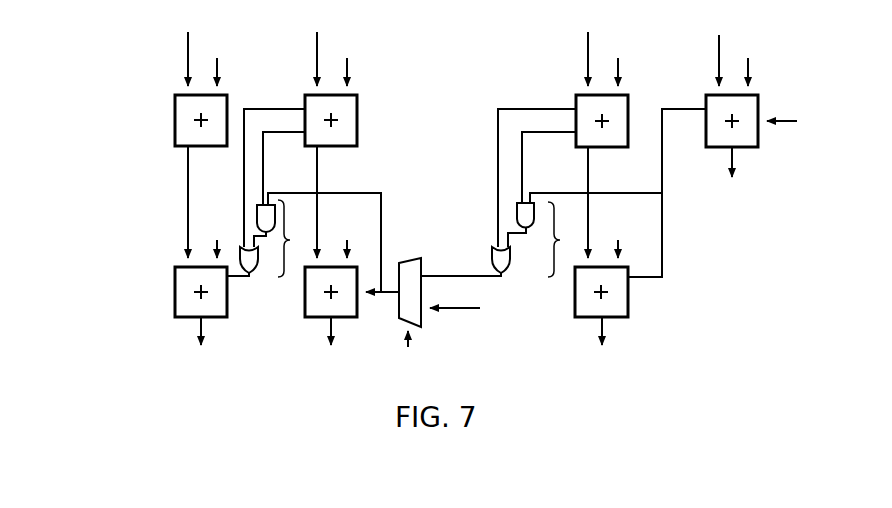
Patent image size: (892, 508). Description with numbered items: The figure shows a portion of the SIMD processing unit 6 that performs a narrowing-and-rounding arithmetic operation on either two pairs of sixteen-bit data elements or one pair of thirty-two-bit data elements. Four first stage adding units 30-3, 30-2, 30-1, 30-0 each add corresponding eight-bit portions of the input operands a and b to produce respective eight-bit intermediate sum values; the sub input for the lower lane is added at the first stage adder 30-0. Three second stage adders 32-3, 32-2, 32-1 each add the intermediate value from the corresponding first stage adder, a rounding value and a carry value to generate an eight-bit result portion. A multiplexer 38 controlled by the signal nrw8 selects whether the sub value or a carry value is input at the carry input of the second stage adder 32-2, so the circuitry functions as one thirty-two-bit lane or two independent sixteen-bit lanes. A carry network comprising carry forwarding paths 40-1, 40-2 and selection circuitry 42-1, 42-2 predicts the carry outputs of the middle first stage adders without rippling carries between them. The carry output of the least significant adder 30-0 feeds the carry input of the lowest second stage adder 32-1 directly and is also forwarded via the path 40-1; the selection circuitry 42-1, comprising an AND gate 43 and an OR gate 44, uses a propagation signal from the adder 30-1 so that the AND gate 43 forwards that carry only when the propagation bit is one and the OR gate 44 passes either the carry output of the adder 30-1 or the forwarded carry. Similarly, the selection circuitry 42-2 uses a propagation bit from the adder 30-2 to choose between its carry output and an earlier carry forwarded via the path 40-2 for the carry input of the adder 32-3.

The SIMD processing unit 6 is at (802, 316).
The first stage adding unit 30-3 is at (175, 120).
The first stage adding unit 30-2 is at (358, 120).
The first stage adding unit 30-1 is at (576, 95).
The first stage adding unit 30-0 is at (758, 146).
The second stage adding unit 32-3 is at (175, 292).
The second stage adding unit 32-2 is at (307, 317).
The second stage adding unit 32-1 is at (628, 316).
The carry forwarding path 40-2 is at (385, 202).
The carry forwarding path 40-1 is at (540, 190).
The selection circuitry 42-2 is at (347, 226).
The selection circuitry 42-1 is at (586, 212).
The AND gate 43 is at (518, 212).
The OR gate 44 is at (492, 262).
The multiplexer 38 is at (421, 325).